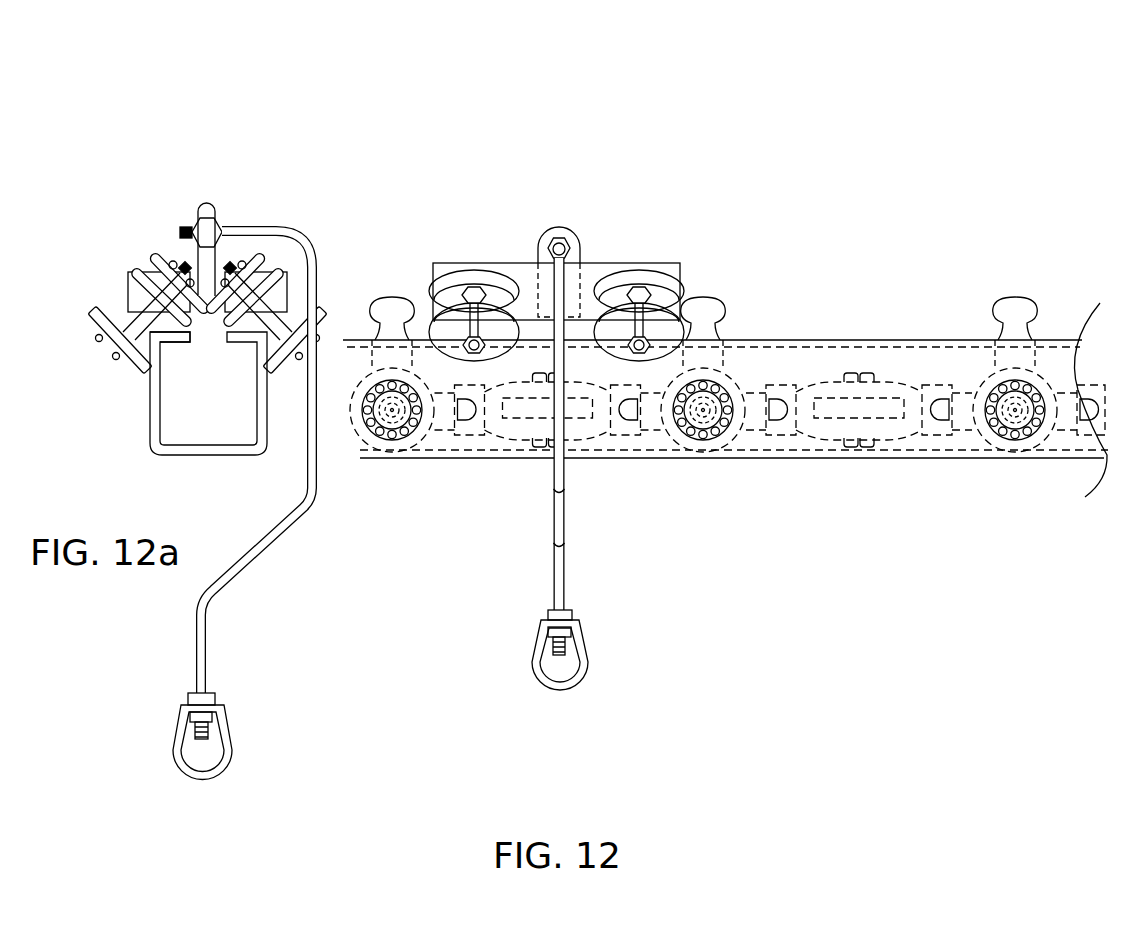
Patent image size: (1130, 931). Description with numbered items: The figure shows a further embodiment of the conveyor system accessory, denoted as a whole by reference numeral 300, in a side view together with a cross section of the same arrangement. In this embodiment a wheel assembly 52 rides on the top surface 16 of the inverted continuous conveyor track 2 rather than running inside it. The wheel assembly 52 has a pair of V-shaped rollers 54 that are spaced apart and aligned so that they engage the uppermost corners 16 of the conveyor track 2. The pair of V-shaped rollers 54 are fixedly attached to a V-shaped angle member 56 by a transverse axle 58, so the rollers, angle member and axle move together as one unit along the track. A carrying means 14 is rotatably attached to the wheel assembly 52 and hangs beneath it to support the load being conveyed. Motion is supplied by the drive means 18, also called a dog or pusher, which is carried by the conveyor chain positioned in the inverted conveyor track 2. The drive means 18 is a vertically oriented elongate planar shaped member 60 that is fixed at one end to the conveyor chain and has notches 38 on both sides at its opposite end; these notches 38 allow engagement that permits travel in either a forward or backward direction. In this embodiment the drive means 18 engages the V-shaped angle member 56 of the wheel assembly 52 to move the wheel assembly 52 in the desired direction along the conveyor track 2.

In FIG. 12A, the inverted continuous conveyor track 2 is at (152, 431).
In FIG. 12A, the carrying means 14 is at (302, 533).
In FIG. 12A, the top surface 16 is at (178, 348).
In FIG. 12, the drive means 18 is at (1012, 307).
In FIG. 12, the notches 38 is at (1033, 328).
In FIG. 12A, the wheel assembly 52 is at (194, 211).
In FIG. 12, the wheel assembly 52 is at (574, 372).
In FIG. 12A, the V-shaped rollers 54 is at (304, 262).
In FIG. 12, the V-shaped rollers 54 is at (657, 292).
In FIG. 12A, the V-shaped angle member 56 is at (218, 290).
In FIG. 12A, the transverse axle 58 is at (140, 276).
In FIG. 12, the vertically oriented elongate planar shaped member 60 is at (388, 314).
In FIG. 12, the conveyor system accessory embodiment 300 is at (822, 163).